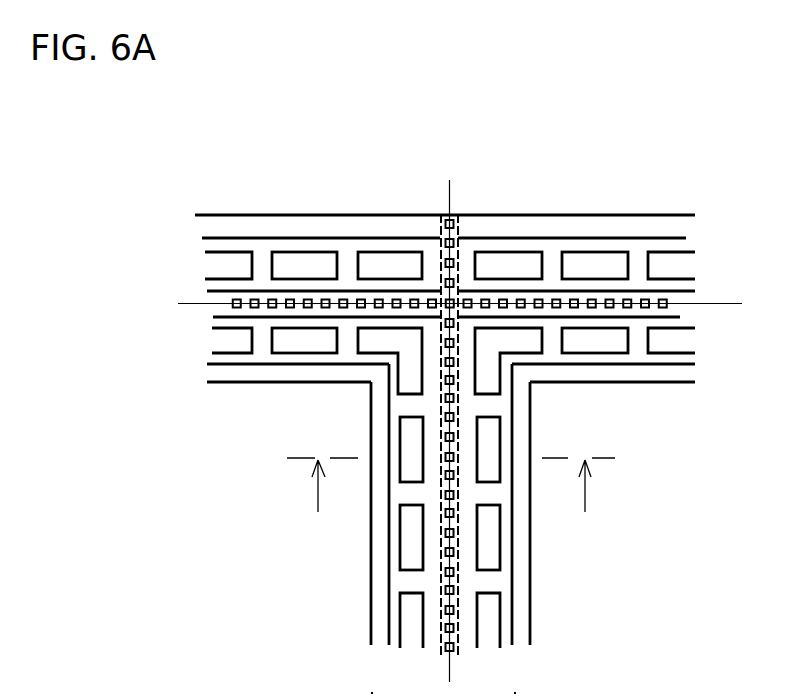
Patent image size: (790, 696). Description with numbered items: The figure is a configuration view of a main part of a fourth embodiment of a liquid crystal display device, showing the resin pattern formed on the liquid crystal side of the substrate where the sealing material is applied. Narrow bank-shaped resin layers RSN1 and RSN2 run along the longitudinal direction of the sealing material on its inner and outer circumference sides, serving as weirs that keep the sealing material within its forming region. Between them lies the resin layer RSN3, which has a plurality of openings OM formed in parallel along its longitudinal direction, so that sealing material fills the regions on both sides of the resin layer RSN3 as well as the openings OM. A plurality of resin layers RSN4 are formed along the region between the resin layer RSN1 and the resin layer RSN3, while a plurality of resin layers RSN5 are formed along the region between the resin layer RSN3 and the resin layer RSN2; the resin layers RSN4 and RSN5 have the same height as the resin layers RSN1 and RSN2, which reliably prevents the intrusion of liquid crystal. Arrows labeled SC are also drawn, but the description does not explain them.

The resin layer RSN1 is at (372, 614).
The resin layer RSN2 is at (515, 222).
The resin layer RSN3 is at (262, 292).
The resin layers RSN4 is at (407, 447).
The resin layers RSN5 is at (392, 258).
The openings OM is at (439, 243).
The scribe cut position SC is at (451, 504).